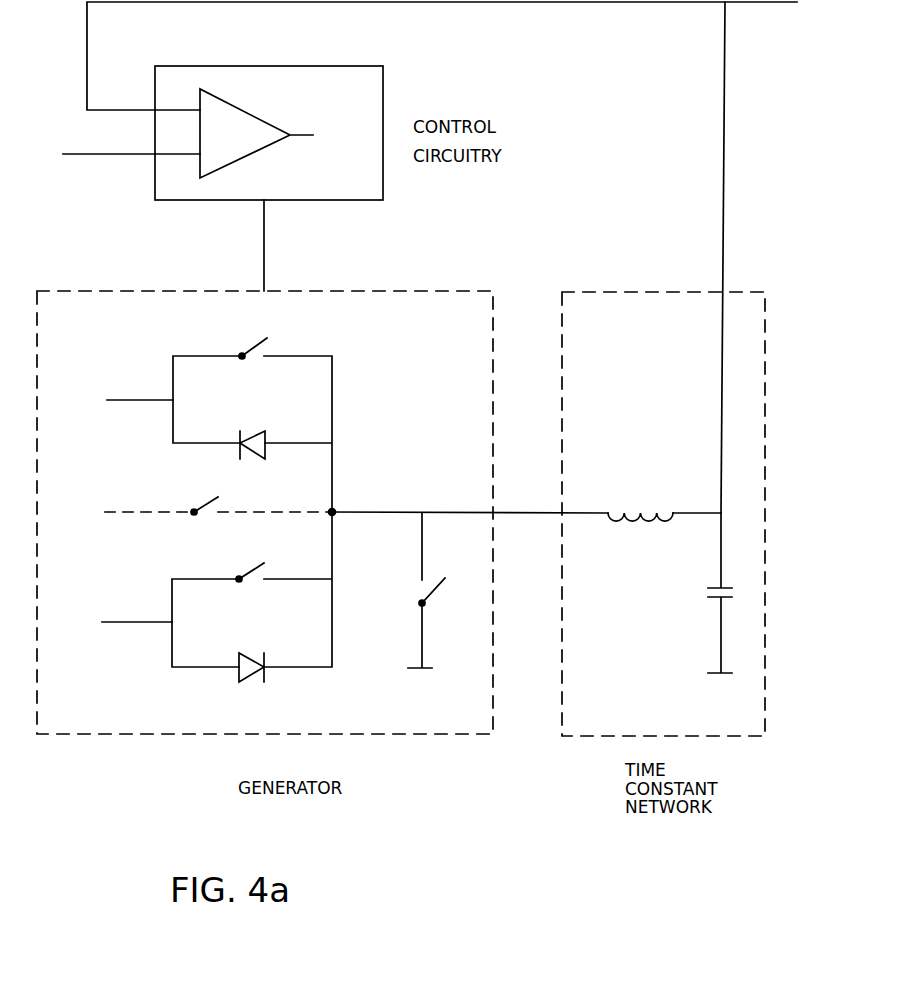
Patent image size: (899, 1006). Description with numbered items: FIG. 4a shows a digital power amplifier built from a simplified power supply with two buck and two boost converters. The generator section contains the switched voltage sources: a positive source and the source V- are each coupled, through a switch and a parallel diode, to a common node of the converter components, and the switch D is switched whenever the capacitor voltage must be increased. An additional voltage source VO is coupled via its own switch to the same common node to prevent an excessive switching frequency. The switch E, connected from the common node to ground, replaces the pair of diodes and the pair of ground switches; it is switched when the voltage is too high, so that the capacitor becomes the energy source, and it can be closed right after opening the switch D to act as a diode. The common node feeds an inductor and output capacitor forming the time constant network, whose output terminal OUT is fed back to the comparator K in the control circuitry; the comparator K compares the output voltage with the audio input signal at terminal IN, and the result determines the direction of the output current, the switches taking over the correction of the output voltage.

The comparator K is at (256, 133).
The switch D is at (246, 344).
The switch E is at (430, 590).
The input terminal IN is at (131, 170).
The output terminal OUT is at (756, 257).
The additional voltage source VO is at (194, 509).
The voltage source V- is at (113, 624).